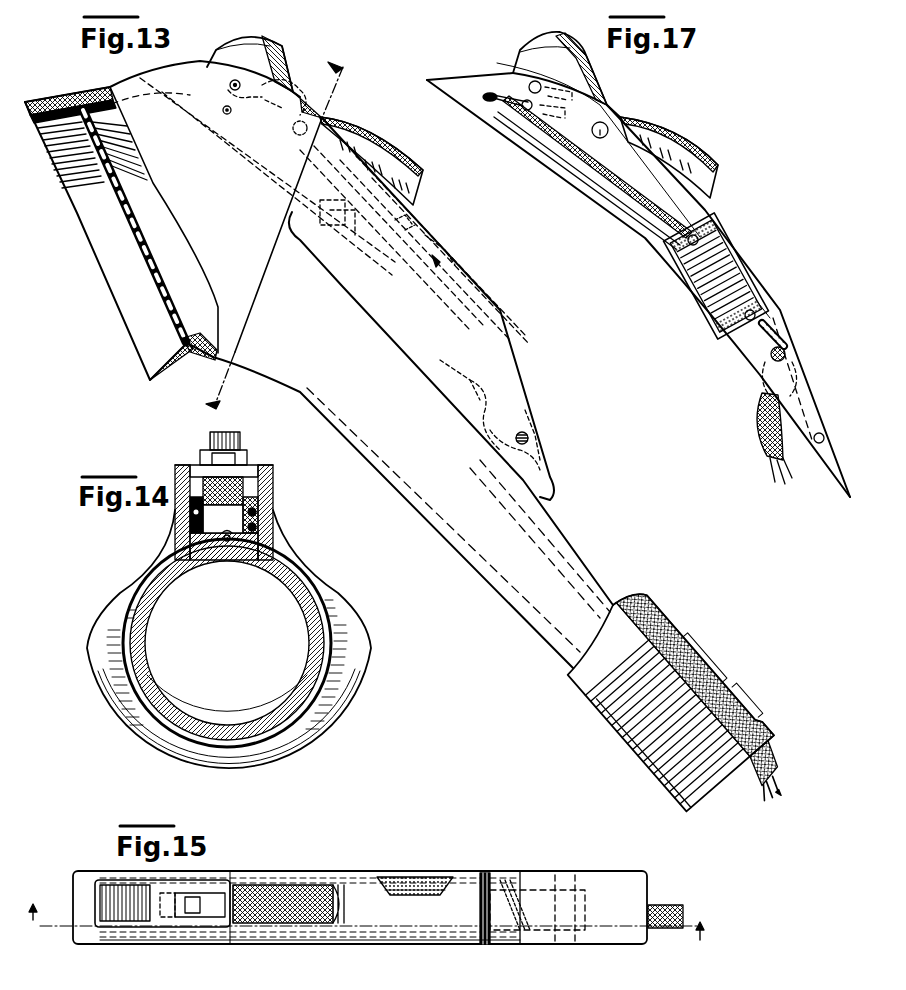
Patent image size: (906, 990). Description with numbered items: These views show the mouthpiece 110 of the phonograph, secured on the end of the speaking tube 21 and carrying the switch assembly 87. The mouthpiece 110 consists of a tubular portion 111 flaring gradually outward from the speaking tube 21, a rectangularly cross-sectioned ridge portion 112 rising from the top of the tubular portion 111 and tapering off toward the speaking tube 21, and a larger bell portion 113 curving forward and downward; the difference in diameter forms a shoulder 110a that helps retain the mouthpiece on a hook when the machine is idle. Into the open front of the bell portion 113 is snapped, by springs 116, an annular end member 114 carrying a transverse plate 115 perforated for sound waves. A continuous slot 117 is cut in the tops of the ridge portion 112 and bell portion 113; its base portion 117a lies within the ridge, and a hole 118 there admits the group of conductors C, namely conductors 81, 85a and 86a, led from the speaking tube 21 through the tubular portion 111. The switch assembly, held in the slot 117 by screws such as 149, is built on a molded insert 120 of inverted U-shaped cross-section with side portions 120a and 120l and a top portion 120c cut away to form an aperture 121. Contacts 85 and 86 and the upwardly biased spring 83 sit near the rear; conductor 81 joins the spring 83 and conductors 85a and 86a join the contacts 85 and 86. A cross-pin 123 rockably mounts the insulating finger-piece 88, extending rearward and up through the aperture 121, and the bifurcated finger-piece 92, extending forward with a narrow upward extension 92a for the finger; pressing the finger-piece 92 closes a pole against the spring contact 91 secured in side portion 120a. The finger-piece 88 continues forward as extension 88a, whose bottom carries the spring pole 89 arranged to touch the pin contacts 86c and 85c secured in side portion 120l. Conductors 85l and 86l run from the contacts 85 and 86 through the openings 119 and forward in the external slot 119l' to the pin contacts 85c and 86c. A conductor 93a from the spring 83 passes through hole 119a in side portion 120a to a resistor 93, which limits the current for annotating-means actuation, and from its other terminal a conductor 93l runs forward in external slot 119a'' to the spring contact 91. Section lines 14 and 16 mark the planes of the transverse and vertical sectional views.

In FIG. 13, the section line 14 is at (264, 229).
In FIG. 15, the section line 16 is at (367, 912).
In FIG. 13, the speaking tube 21 is at (744, 736).
In FIG. 13, the conductor 81 is at (772, 824).
In FIG. 13, the spring 83 is at (400, 245).
In FIG. 13, the contact 85 is at (443, 262).
In FIG. 13, the conductor 85a is at (779, 797).
In FIG. 17, the pin contact 85c is at (530, 84).
In FIG. 14, the conductor 85l is at (259, 511).
In FIG. 15, the conductor 85l is at (402, 876).
In FIG. 13, the contact 86 is at (408, 275).
In FIG. 13, the conductor 86a is at (777, 810).
In FIG. 17, the pin contact 86c is at (523, 102).
In FIG. 14, the conductor 86l is at (259, 528).
In FIG. 13, the switch assembly 87 is at (426, 203).
In FIG. 17, the switch assembly 87 is at (746, 219).
In FIG. 15, the switch assembly 87 is at (331, 866).
In FIG. 13, the insulating finger-piece 88 is at (415, 166).
In FIG. 17, the insulating finger-piece 88 is at (720, 172).
In FIG. 14, the insulating finger-piece 88 is at (215, 470).
In FIG. 15, the insulating finger-piece 88 is at (292, 930).
In FIG. 13, the extension 88a is at (290, 100).
In FIG. 13, the spring pole 89 is at (229, 86).
In FIG. 17, the spring contact 91 is at (512, 110).
In FIG. 13, the finger-piece 92 is at (226, 52).
In FIG. 17, the finger-piece 92 is at (586, 77).
In FIG. 14, the finger-piece 92 is at (244, 458).
In FIG. 15, the finger-piece 92 is at (98, 898).
In FIG. 13, the upward extension 92a is at (276, 46).
In FIG. 14, the upward extension 92a is at (241, 436).
In FIG. 15, the upward extension 92a is at (103, 888).
In FIG. 17, the resistor 93 is at (735, 327).
In FIG. 17, the conductor 93a is at (786, 330).
In FIG. 17, the conductor 93l is at (600, 170).
In FIG. 14, the conductor 93l is at (176, 520).
In FIG. 15, the conductor 93l is at (146, 945).
In FIG. 13, the mouthpiece 110 is at (436, 518).
In FIG. 14, the mouthpiece 110 is at (103, 669).
In FIG. 14, the shoulder 110a is at (336, 586).
In FIG. 13, the tubular portion 111 is at (606, 563).
In FIG. 14, the tubular portion 111 is at (142, 702).
In FIG. 13, the ridge portion 112 is at (500, 310).
In FIG. 14, the ridge portion 112 is at (274, 470).
In FIG. 13, the bell portion 113 is at (190, 267).
In FIG. 14, the bell portion 113 is at (344, 690).
In FIG. 13, the annular end member 114 is at (44, 100).
In FIG. 13, the transverse plate 115 is at (127, 233).
In FIG. 13, the springs 116 is at (112, 122).
In FIG. 13, the slot 117 is at (133, 73).
In FIG. 14, the slot 117 is at (227, 556).
In FIG. 13, the base portion 117a is at (452, 384).
In FIG. 13, the hole 118 is at (466, 422).
In FIG. 13, the conductor opening 119 is at (332, 240).
In FIG. 17, the hole 119a is at (804, 325).
In FIG. 17, the external slot 119a'' is at (597, 167).
In FIG. 14, the external slot 119l' is at (319, 531).
In FIG. 15, the external slot 119l' is at (425, 863).
In FIG. 17, the molded insert 120 is at (785, 305).
In FIG. 14, the side portion 120a is at (192, 572).
In FIG. 15, the side portion 120a is at (385, 944).
In FIG. 15, the base or top portion 120c is at (460, 900).
In FIG. 14, the side portion 120l is at (261, 572).
In FIG. 15, the side portion 120l is at (565, 874).
In FIG. 15, the aperture 121 is at (280, 878).
In FIG. 17, the cross-pin 123 is at (606, 124).
In FIG. 13, the screws 149 is at (530, 440).
In FIG. 13, the group of conductors C is at (760, 773).
In FIG. 17, the group of conductors C is at (770, 462).
In FIG. 15, the group of conductors C is at (660, 906).